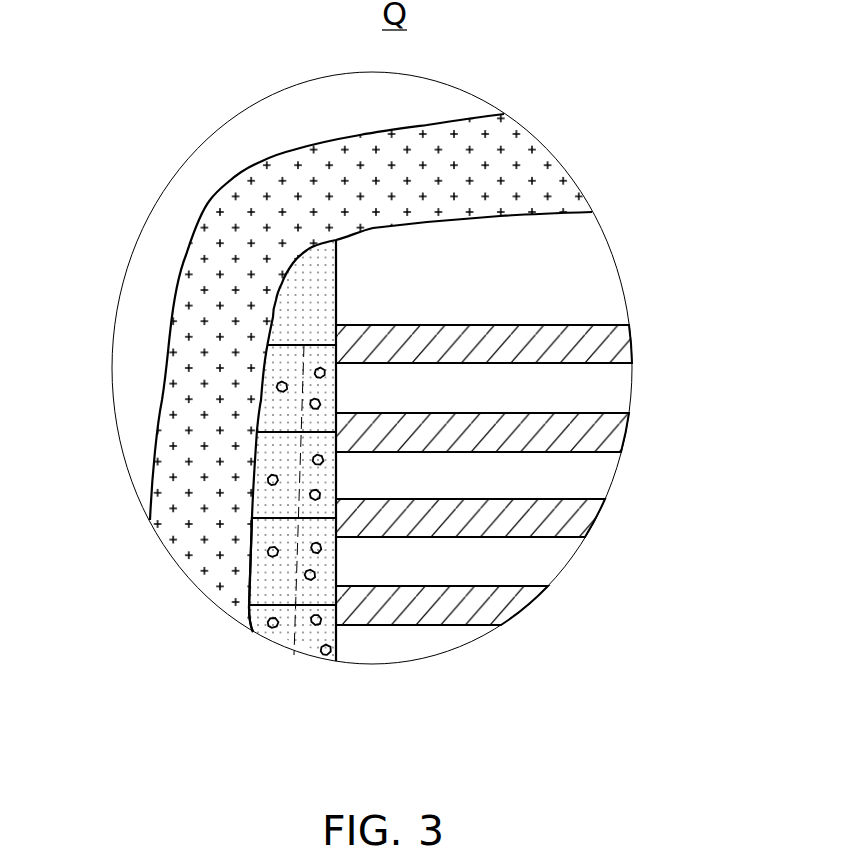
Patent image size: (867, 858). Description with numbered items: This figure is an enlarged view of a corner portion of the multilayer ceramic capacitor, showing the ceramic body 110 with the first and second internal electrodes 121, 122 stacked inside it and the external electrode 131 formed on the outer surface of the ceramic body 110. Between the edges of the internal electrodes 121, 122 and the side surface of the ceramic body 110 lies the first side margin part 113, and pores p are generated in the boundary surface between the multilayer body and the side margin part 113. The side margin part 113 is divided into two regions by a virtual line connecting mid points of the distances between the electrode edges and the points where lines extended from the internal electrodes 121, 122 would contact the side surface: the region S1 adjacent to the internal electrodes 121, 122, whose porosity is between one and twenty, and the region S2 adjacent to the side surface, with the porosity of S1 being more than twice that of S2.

The ceramic body 110 is at (588, 243).
The first side margin part 113 is at (258, 612).
The first internal electrode 121 is at (618, 340).
The second internal electrode 122 is at (618, 428).
The external electrode 131 is at (173, 478).
The pores p is at (313, 493).
The region adjacent to the internal electrodes S1 is at (282, 637).
The region adjacent to the side surface S2 is at (313, 647).